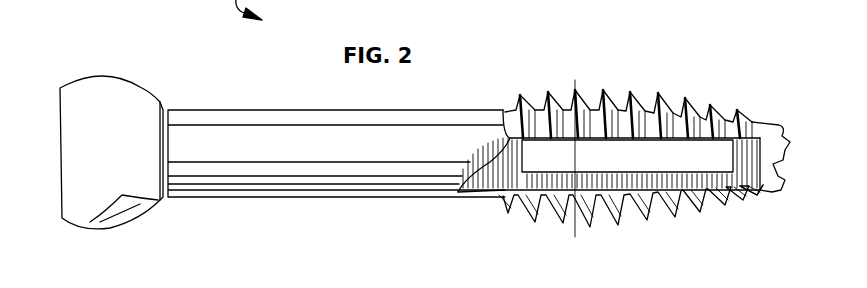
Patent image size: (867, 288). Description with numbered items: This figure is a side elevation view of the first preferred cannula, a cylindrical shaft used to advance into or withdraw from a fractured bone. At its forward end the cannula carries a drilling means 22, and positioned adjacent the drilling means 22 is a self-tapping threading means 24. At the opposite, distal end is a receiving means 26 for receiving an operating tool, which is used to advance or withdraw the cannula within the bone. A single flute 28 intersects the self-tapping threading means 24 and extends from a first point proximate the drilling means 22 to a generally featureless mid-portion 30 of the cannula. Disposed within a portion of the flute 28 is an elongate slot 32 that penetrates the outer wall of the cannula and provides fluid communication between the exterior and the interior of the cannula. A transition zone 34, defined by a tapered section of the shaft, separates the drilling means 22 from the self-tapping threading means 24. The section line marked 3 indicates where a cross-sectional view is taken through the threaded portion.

The drilling means 22 is at (783, 124).
The self-tapping threading means 24 is at (630, 92).
The receiving means 26 is at (105, 86).
The flute 28 is at (623, 193).
The mid-portion 30 is at (318, 118).
The elongate slot 32 is at (641, 168).
The transition zone 34 is at (763, 186).
The section line 3- 3 is at (575, 80).